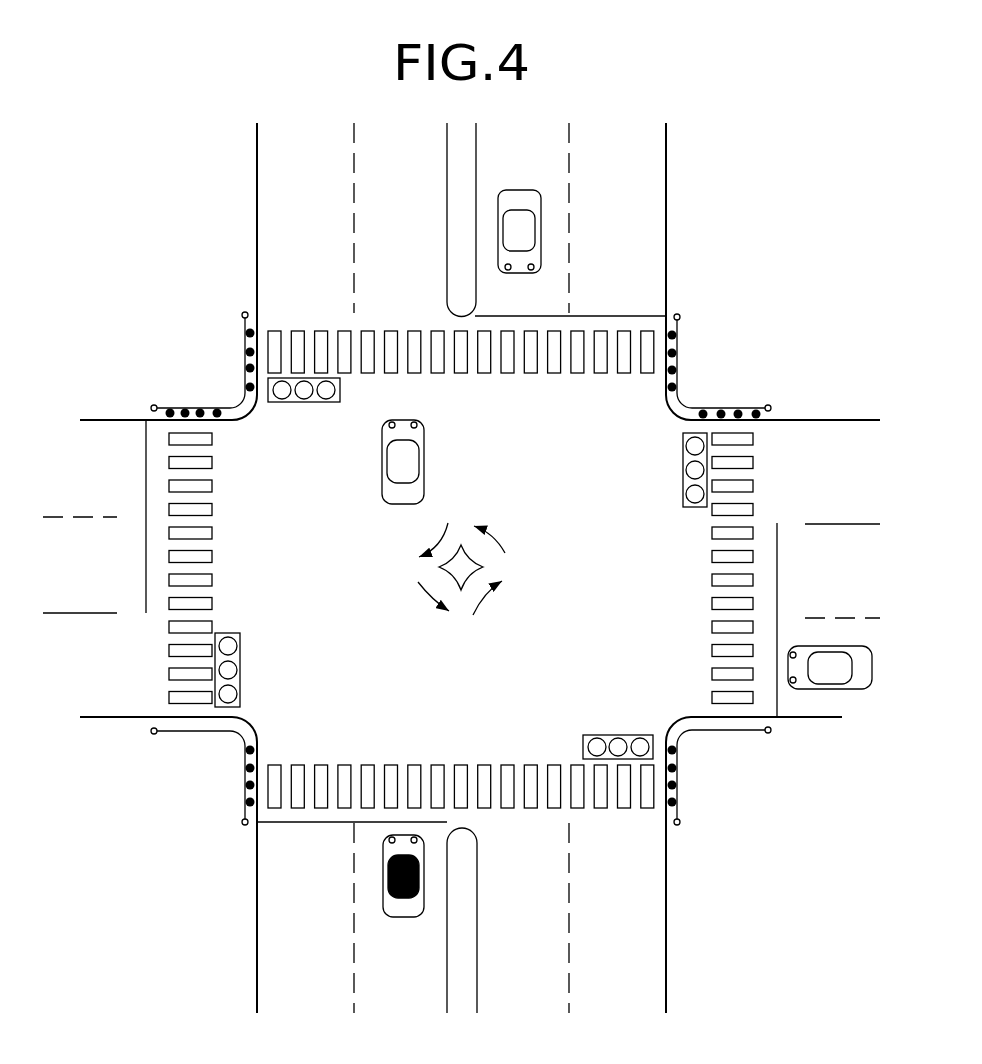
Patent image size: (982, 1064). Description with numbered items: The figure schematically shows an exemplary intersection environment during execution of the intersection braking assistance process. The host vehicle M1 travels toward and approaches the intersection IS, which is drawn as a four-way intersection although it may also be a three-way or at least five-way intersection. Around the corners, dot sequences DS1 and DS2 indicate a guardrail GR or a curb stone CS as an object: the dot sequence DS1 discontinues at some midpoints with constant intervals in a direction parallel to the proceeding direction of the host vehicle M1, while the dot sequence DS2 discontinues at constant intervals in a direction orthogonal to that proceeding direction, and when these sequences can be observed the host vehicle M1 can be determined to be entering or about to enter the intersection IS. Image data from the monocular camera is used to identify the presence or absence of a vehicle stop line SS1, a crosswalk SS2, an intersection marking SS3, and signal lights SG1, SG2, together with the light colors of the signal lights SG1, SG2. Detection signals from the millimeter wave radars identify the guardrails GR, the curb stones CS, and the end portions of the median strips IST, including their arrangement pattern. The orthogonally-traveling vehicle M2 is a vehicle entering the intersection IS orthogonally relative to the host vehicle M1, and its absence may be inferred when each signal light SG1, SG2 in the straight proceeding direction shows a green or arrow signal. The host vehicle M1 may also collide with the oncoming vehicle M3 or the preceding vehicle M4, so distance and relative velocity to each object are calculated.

The intersection IS is at (362, 635).
The median strip IST is at (461, 304).
The curb stone CS is at (238, 419).
The guardrail GR is at (237, 398).
The dot sequence DS1 is at (256, 342).
The dot sequence DS2 is at (175, 419).
The vehicle stop line SS1 is at (310, 823).
The crosswalk SS2 is at (484, 374).
The intersection marking SS3 is at (508, 569).
The signal light SG1 is at (341, 401).
The signal light SG2 is at (608, 735).
The host vehicle M1 is at (403, 908).
The orthogonally-traveling vehicle M2 is at (862, 673).
The oncoming vehicle M3 is at (520, 197).
The preceding vehicle M4 is at (385, 490).